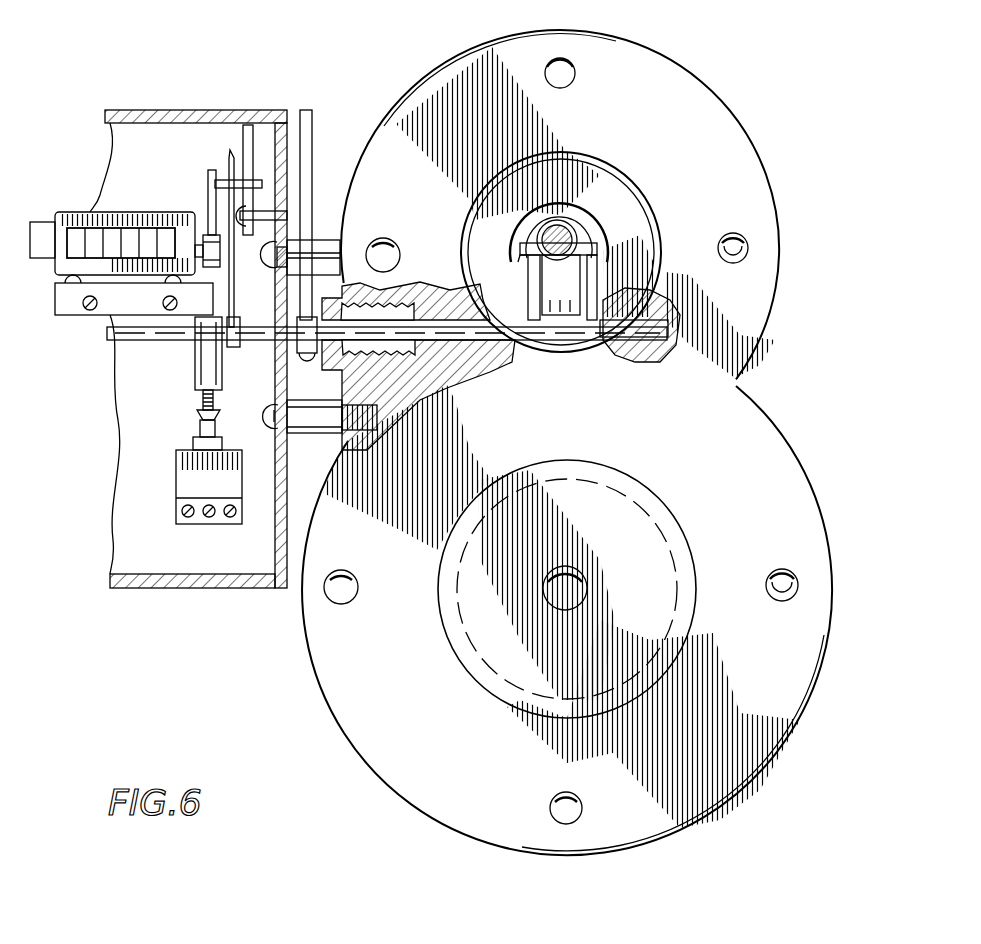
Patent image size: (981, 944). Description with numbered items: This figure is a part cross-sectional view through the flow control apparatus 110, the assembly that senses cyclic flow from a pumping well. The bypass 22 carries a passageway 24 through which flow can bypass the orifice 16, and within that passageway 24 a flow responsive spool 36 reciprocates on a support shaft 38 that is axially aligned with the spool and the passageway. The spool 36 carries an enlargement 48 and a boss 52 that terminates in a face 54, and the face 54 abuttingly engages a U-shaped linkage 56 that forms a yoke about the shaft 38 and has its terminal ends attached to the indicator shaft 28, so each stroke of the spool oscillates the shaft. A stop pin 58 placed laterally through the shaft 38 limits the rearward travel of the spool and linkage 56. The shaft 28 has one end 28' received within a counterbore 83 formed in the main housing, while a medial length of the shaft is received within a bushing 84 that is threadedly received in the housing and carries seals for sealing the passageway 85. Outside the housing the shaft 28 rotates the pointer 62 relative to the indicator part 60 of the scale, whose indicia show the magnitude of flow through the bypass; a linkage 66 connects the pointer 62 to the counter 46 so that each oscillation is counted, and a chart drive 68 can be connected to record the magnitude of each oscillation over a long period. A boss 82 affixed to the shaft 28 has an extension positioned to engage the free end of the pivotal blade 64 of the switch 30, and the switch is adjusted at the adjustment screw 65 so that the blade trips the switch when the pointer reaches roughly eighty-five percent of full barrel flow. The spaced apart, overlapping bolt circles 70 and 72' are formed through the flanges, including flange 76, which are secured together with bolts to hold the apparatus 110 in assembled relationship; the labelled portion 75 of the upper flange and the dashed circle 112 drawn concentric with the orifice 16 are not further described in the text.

The orifice 16 is at (628, 480).
The bypass 22 is at (766, 152).
The passageway 24 is at (597, 166).
The indicator shaft 28 is at (367, 347).
The shaft end 28' is at (665, 305).
The switch 30 is at (168, 487).
The spool 36 is at (649, 203).
The support shaft 38 is at (561, 285).
The counter 46 is at (46, 228).
The enlargement 48 is at (612, 203).
The boss 52 is at (607, 244).
The face 54 is at (524, 262).
The U-shaped linkage 56 is at (571, 228).
The stop means 58 is at (520, 250).
The indicator part 60 is at (250, 127).
The pointer 62 is at (234, 150).
The blade 64 is at (199, 433).
The adjustment screw 65 is at (201, 408).
The linkage 66 is at (210, 210).
The chart drive 68 is at (305, 163).
The bolt circle 70 is at (782, 569).
The bolt circle 72' is at (734, 227).
The plate face 75 is at (690, 107).
The flange 76 is at (820, 553).
The boss 82 is at (197, 372).
The counterbore 83 is at (640, 350).
The bushing 84 is at (380, 348).
The passageway 85 is at (484, 346).
The apparatus 110 is at (806, 58).
The gasket circle 112 is at (682, 540).